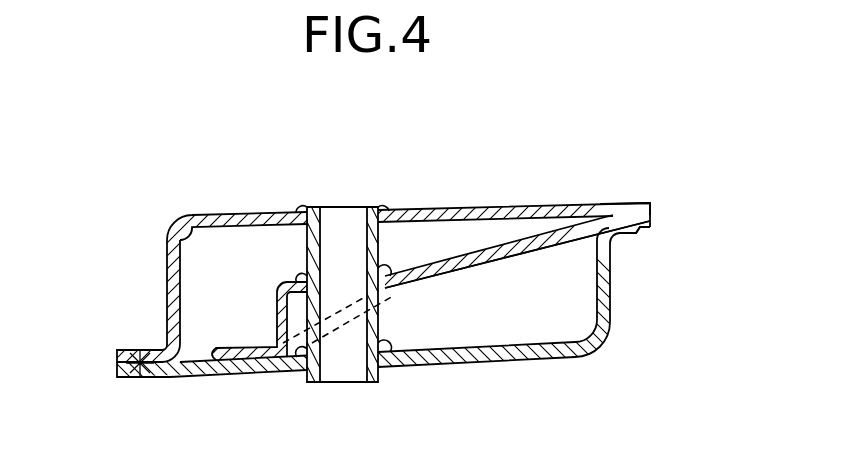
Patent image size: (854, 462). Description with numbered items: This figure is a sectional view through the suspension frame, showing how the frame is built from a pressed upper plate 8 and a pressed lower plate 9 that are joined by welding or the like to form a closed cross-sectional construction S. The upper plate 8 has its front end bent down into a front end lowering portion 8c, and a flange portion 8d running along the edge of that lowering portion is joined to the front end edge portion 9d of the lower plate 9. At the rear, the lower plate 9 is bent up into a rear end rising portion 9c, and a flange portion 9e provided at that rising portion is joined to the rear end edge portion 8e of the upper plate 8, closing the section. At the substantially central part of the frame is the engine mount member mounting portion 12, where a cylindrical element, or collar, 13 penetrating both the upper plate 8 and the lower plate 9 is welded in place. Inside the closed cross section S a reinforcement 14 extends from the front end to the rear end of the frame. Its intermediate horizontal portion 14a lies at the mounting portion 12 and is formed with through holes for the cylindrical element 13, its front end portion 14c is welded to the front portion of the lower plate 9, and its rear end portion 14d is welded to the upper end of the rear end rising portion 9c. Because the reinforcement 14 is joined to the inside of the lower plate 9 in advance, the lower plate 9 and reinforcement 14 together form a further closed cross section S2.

The upper plate 8 is at (450, 207).
The front end lowering portion 8c is at (167, 256).
The flange portion 8d is at (127, 352).
The rear end edge portion 8e is at (631, 203).
The lower plate 9 is at (482, 362).
The rear end rising portion 9c is at (612, 283).
The front end edge portion 9d is at (120, 378).
The flange portion 9e is at (636, 233).
The engine mount member mounting portion 12 is at (338, 207).
The cylindrical element 13 is at (315, 380).
The reinforcement 14 is at (547, 252).
The horizontal portion 14a is at (393, 292).
The front end portion 14c is at (238, 347).
The rear end portion 14d is at (578, 224).
The closed cross section S is at (240, 248).
The closed cross section S2 is at (540, 327).